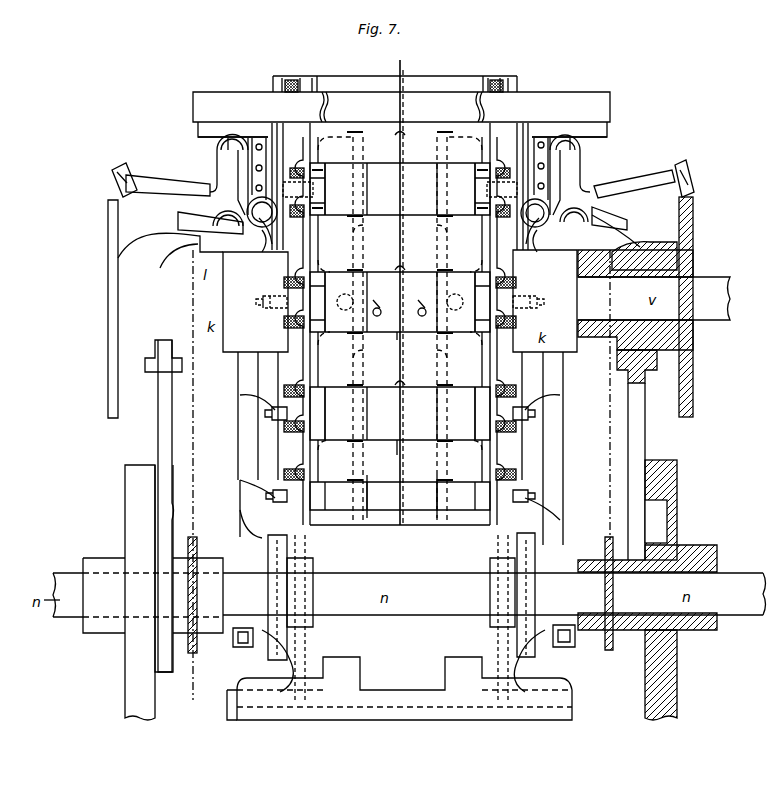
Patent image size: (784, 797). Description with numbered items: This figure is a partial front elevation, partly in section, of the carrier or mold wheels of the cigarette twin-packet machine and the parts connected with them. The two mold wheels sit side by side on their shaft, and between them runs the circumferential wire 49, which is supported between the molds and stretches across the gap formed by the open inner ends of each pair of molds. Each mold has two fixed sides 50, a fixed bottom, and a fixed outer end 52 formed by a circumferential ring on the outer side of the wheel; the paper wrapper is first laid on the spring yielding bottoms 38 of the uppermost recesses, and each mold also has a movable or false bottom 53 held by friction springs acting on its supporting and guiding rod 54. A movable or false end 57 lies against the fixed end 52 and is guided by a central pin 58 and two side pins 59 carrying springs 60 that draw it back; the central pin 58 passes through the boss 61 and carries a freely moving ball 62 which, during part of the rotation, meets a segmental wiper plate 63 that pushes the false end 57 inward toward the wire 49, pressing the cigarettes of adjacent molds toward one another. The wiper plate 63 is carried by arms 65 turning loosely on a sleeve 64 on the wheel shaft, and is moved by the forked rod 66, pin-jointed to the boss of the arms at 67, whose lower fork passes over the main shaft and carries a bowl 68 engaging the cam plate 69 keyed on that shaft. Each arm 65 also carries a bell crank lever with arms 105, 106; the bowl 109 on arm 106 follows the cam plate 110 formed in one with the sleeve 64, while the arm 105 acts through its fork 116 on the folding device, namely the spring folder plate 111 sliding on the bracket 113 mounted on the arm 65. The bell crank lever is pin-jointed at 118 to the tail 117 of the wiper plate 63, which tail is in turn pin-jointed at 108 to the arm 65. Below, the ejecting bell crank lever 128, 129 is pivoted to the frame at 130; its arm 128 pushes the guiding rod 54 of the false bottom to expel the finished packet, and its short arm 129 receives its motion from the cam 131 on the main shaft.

The spring yielding bottoms 38 is at (400, 340).
The circumferential wire 49 is at (402, 88).
The fixed sides 50 is at (385, 440).
The fixed outer end 52 is at (282, 182).
The movable or false bottom 53 is at (413, 398).
The supporting and guiding rod 54 is at (400, 302).
The movable or false end 57 is at (480, 411).
The central pin 58 is at (401, 357).
The side pins 59 is at (571, 382).
The springs 60 is at (300, 163).
The boss 61 is at (230, 517).
The ball 62 is at (283, 80).
The segmental wiper plate 63 is at (275, 72).
The sleeve 64 is at (632, 277).
The arms 65 is at (651, 228).
The forked rod 66 is at (158, 402).
The pin joint 67 is at (145, 361).
The bowl 68 is at (667, 525).
The cam plate 69 is at (125, 500).
The arm of bell crank lever 105 is at (218, 177).
The arm of bell crank lever 106 is at (170, 190).
The pin joint 108 is at (258, 228).
The bowl 109 is at (127, 163).
The cam plate 110 is at (108, 233).
The spring folder plate 111 is at (193, 106).
The bracket 113 is at (252, 142).
The fork 116 is at (220, 150).
The tail of wiper plate 117 is at (178, 222).
The pin joint 118 is at (591, 250).
The arm of bell crank lever 128 is at (300, 657).
The short arm of bell crank lever 129 is at (262, 652).
The pivot 130 is at (240, 685).
The cam 131 is at (268, 561).